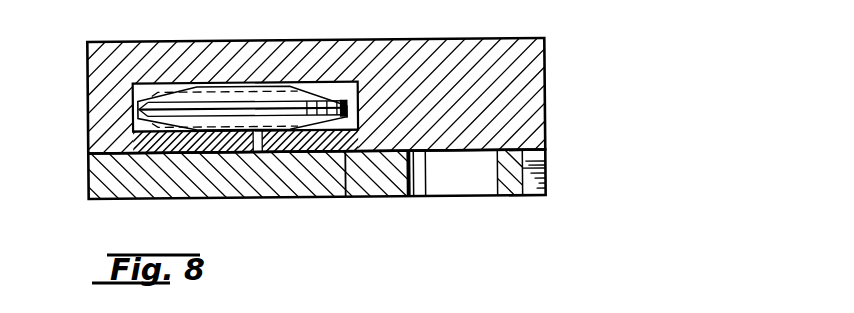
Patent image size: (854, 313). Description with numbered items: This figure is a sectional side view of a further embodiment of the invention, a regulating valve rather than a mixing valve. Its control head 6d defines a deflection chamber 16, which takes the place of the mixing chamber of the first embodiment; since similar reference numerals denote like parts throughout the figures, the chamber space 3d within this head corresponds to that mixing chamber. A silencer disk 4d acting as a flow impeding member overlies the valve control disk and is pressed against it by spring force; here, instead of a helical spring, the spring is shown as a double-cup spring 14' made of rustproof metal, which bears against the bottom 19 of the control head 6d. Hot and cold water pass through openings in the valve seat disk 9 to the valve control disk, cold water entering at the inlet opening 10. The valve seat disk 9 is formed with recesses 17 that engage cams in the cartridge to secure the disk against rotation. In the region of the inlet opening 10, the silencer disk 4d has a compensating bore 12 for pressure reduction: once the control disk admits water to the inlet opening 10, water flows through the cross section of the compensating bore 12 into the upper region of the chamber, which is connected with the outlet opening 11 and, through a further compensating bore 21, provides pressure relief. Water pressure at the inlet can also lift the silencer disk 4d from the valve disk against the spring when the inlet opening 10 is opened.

The cavity in housing 3d is at (143, 97).
The control head 6d is at (364, 48).
The double-cup spring 14' is at (242, 67).
The bottom of the control head 19 is at (321, 83).
The deflection chamber 16 is at (342, 88).
The compensating bore 12 is at (254, 138).
The inlet opening 10 is at (285, 183).
The compensating bore 21 is at (317, 178).
The silencer disk 4d is at (344, 197).
The valve seat disk 9 is at (387, 172).
The outlet opening 11 is at (455, 183).
The recesses 17 is at (533, 188).